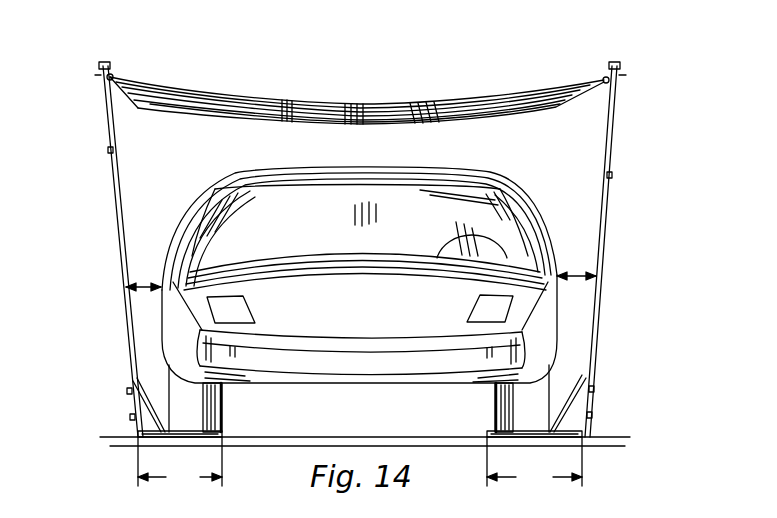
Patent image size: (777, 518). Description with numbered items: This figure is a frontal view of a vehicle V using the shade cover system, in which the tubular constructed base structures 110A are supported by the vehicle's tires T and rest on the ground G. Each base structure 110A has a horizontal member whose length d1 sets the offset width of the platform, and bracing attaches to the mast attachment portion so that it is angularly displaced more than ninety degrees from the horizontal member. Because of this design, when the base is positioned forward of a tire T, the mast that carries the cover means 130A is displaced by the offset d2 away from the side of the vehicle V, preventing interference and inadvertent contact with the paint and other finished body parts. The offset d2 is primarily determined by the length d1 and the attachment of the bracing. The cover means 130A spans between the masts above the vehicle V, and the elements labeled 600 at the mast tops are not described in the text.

The tie/hook attachment 600 is at (116, 76).
The cover means 130A is at (340, 100).
The tubular base structure 110A is at (138, 435).
The ground G is at (603, 437).
The vehicle V is at (358, 318).
The tire T is at (222, 402).
The offset width d1 is at (360, 464).
The offset d2 is at (122, 280).